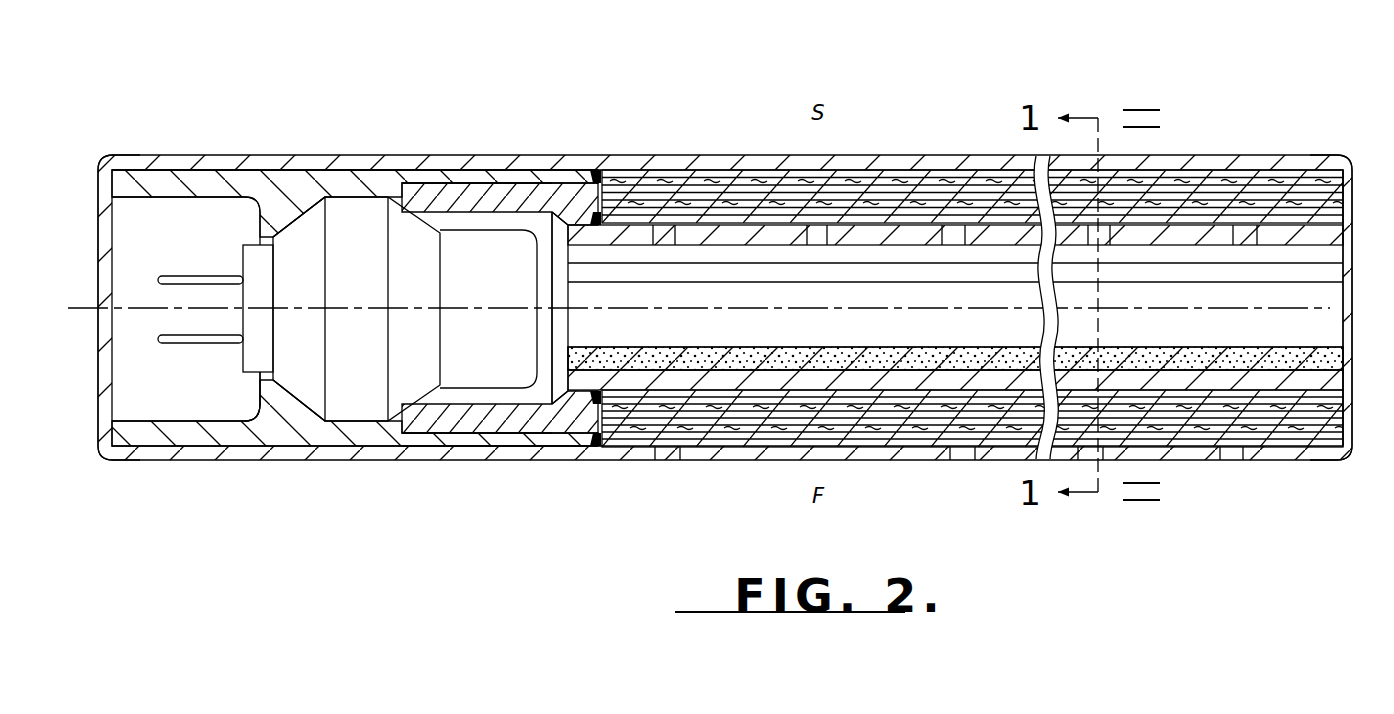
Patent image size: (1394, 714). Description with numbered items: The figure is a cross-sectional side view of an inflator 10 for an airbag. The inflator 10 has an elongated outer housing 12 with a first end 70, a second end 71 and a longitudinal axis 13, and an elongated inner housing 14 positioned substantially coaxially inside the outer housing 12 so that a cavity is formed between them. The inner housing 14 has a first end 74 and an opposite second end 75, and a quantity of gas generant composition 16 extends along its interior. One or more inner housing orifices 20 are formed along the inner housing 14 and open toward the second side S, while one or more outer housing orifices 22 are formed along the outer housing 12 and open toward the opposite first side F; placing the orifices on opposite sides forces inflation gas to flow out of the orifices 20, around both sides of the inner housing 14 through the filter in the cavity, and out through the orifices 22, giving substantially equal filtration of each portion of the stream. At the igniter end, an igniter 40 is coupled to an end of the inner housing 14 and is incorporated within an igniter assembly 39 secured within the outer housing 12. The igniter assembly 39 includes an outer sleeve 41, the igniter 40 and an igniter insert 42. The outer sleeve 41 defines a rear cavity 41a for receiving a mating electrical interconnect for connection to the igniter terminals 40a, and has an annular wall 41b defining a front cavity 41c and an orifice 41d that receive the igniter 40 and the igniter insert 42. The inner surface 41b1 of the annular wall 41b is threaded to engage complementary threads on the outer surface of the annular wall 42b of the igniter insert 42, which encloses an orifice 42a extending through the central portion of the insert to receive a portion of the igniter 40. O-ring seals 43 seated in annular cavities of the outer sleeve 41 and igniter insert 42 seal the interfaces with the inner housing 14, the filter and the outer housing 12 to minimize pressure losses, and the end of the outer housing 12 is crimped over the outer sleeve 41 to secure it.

The inflator 10 is at (745, 117).
The outer housing 12 is at (655, 462).
The longitudinal axis 13 is at (88, 308).
The inner housing 14 is at (582, 235).
The gas generant composition 16 is at (763, 367).
The inner housing orifices 20 is at (957, 235).
The outer housing orifices 22 is at (962, 452).
The igniter assembly 39 is at (195, 182).
The igniter 40 is at (358, 398).
The igniter terminals 40a is at (170, 278).
The outer sleeve 41 is at (338, 185).
The rear cavity 41a is at (193, 393).
The annular wall 41b is at (462, 185).
The inner surface 41b1 is at (525, 185).
The front cavity 41c is at (288, 212).
The orifice 41d is at (235, 405).
The igniter insert 42 is at (495, 197).
The orifice 42a is at (507, 395).
The annular wall 42b is at (408, 180).
The O-ring seals 43 is at (597, 172).
The first end 70 is at (1310, 147).
The second end 71 is at (167, 147).
The first end 74 is at (1360, 363).
The second end 75 is at (558, 362).